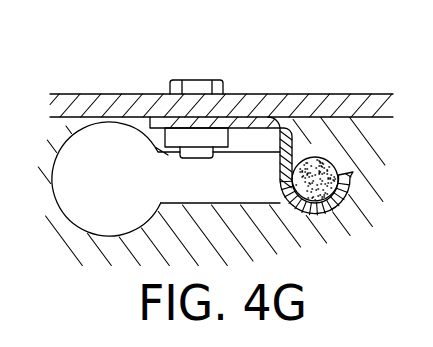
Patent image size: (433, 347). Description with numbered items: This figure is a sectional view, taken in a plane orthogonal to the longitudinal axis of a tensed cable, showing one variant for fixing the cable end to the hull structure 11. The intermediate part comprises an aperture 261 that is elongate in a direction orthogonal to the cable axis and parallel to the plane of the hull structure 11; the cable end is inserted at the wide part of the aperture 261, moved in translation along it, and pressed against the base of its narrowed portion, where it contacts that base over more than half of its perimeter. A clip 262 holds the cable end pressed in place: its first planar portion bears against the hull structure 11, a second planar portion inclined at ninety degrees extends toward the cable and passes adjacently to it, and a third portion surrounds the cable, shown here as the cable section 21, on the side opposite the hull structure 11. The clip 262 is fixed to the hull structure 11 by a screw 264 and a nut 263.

The hull structure 11 is at (80, 110).
The seal / O-ring ball 21 is at (314, 166).
The aperture 261 is at (110, 190).
The clip 262 is at (240, 123).
The nut 263 is at (183, 137).
The screw 264 is at (196, 85).